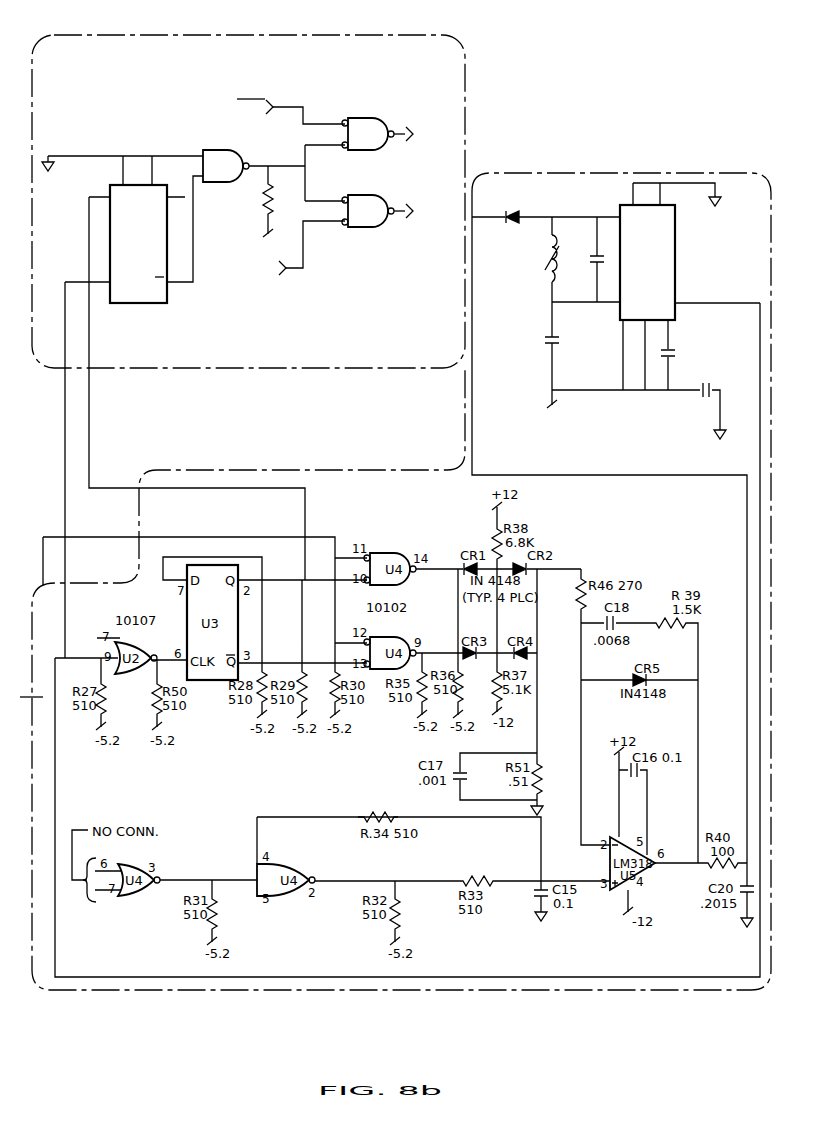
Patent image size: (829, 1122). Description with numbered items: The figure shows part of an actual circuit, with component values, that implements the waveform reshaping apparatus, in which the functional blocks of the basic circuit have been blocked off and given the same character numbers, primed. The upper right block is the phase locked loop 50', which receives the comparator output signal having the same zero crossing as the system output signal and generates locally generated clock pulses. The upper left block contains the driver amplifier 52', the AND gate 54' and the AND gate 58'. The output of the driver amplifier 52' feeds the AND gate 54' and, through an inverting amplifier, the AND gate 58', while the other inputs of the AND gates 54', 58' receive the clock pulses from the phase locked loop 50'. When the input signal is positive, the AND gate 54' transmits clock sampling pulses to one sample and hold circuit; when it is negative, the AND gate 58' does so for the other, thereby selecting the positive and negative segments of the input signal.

The phase locked loop 50' is at (395, 567).
The driver amplifier 52' is at (248, 189).
The AND gate 54' is at (122, 239).
The AND gate 58' is at (324, 187).